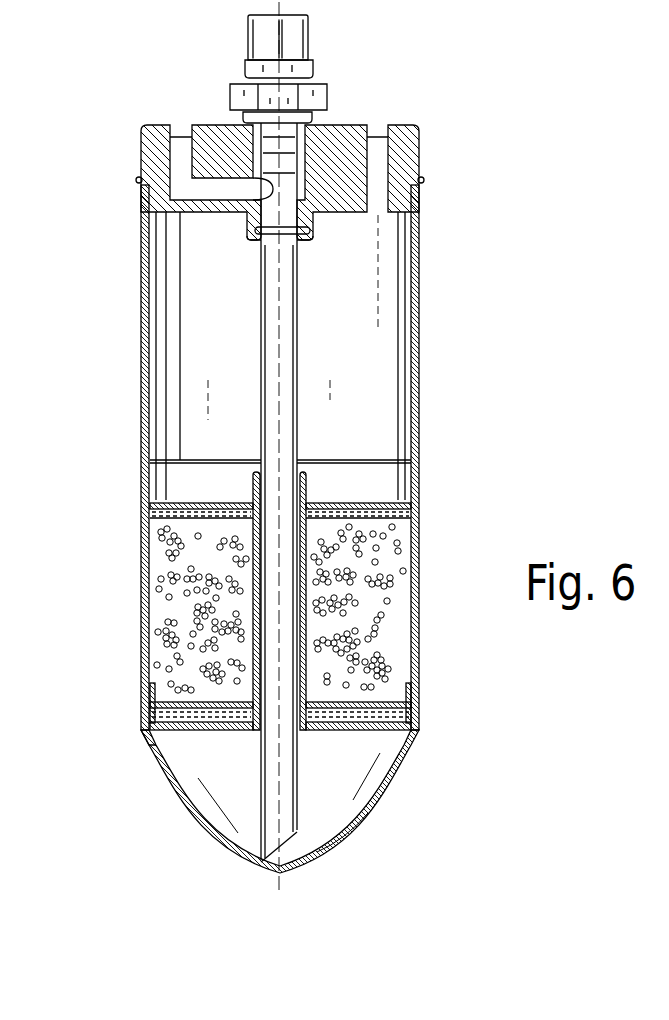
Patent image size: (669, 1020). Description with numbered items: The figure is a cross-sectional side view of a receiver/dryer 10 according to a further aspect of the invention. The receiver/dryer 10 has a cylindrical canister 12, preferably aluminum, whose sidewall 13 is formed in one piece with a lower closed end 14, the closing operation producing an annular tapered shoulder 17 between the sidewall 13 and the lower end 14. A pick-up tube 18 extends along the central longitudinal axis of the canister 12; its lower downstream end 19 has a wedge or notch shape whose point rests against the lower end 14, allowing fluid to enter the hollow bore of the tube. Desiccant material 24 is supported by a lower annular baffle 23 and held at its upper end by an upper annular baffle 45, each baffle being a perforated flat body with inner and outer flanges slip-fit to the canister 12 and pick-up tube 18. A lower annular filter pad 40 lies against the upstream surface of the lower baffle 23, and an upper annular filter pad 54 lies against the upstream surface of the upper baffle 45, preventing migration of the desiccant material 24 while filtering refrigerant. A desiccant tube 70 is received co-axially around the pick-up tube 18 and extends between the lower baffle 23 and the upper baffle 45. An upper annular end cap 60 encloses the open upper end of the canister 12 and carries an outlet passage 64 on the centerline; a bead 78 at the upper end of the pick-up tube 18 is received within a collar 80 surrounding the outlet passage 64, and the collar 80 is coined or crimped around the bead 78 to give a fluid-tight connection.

The receiver/dryer 10 is at (80, 255).
The cylindrical canister 12 is at (141, 308).
The sidewall 13 is at (141, 366).
The lower closed end 14 is at (182, 803).
The annular tapered shoulder 17 is at (150, 742).
The pick-up tube 18 is at (261, 350).
The lower downstream end 19 is at (286, 838).
The lower annular baffle 23 is at (383, 730).
The desiccant material 24 is at (411, 607).
The lower annular filter pad 40 is at (407, 712).
The upper annular baffle 45 is at (380, 503).
The upper annular filter pad 54 is at (185, 504).
The upper annular end cap 60 is at (141, 152).
The outlet passage 64 is at (296, 190).
The desiccant tube 70 is at (305, 478).
The bead 78 is at (261, 246).
The collar 80 is at (302, 233).